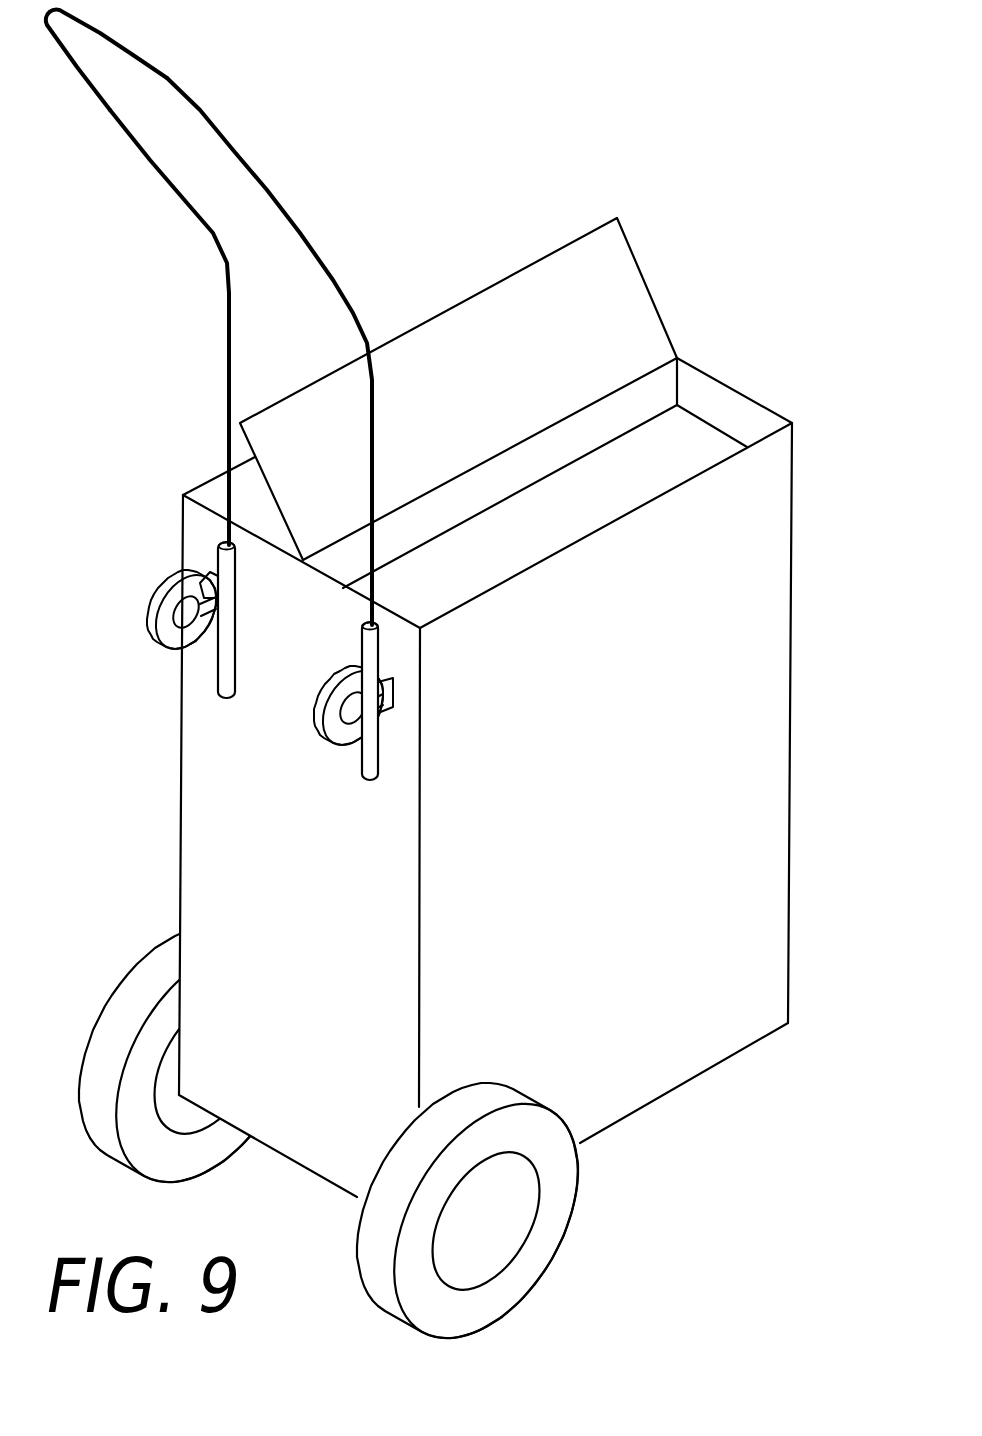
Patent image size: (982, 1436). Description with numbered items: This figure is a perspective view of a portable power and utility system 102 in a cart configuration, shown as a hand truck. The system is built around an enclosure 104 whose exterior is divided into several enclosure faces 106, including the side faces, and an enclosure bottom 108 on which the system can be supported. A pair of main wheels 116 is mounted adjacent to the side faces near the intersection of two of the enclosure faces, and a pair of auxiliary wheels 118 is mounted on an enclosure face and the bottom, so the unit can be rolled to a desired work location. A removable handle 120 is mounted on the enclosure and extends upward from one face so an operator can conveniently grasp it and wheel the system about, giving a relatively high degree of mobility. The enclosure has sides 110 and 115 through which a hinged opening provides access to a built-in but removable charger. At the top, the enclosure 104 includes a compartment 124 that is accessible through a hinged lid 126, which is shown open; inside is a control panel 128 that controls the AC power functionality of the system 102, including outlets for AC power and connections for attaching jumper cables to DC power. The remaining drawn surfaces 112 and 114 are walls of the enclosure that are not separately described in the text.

The cart configuration power and utility system 102 is at (680, 252).
The enclosure 104 is at (485, 683).
The enclosure faces 106 is at (212, 395).
The enclosure bottom 108 is at (668, 1093).
The side 110 is at (794, 554).
The front wall 112 is at (355, 876).
The left side wall 114 is at (180, 787).
The side 115 is at (615, 834).
The main wheels 116 is at (485, 1078).
The auxiliary wheels 118 is at (173, 575).
The removable handle 120 is at (167, 72).
The compartment 124 is at (703, 413).
The hinged lid 126 is at (617, 214).
The control panel 128 is at (557, 539).